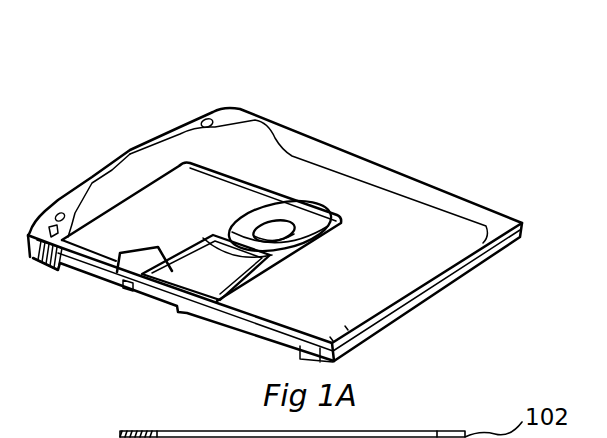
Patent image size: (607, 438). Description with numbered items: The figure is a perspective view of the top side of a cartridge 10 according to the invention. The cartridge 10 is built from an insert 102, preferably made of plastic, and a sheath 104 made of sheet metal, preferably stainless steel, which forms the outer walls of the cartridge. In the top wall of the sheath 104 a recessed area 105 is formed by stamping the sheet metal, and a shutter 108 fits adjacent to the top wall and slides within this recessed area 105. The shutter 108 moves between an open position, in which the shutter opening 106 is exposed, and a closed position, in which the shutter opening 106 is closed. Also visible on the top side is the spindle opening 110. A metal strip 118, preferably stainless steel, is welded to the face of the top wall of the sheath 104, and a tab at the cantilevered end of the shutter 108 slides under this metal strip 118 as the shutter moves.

The cartridge 10 is at (462, 134).
The insert 102 is at (235, 117).
The sheath 104 is at (518, 172).
The recessed area 105 is at (167, 212).
The shutter opening 106 is at (184, 257).
The shutter 108 is at (215, 203).
The spindle opening 110 is at (305, 224).
The metal strip 118 is at (208, 170).